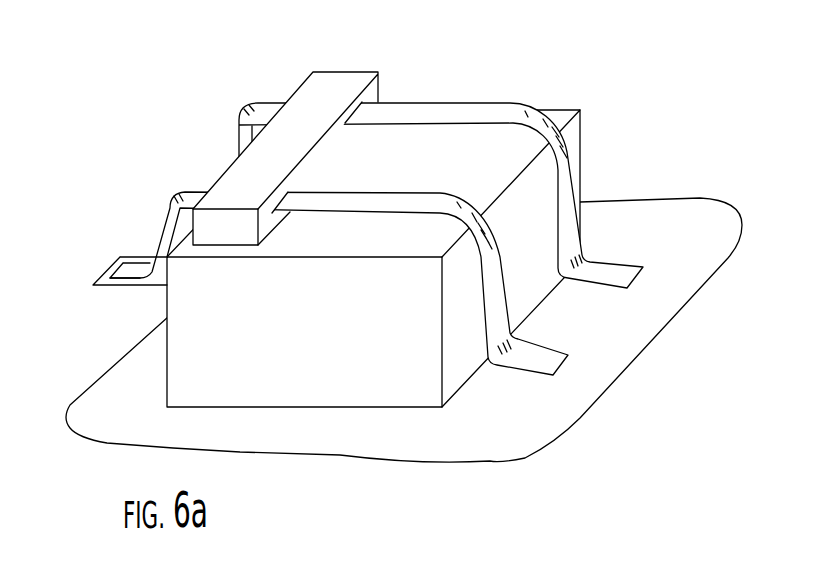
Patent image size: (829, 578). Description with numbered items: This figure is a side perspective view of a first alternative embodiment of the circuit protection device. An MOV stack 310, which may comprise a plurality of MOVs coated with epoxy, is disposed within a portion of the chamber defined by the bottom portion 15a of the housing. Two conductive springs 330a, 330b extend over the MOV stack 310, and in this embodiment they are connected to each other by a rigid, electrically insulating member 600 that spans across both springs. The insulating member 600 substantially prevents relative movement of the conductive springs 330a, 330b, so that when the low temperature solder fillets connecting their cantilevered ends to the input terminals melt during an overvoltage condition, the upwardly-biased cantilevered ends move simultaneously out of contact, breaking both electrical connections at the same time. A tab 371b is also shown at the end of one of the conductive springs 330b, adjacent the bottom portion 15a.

The insulating member 600 is at (343, 83).
The conductive spring 330a is at (510, 110).
The MOV stack 310 is at (570, 168).
The bottom portion 15a is at (657, 218).
The conductive spring 330b is at (398, 227).
The tab 371b is at (140, 288).